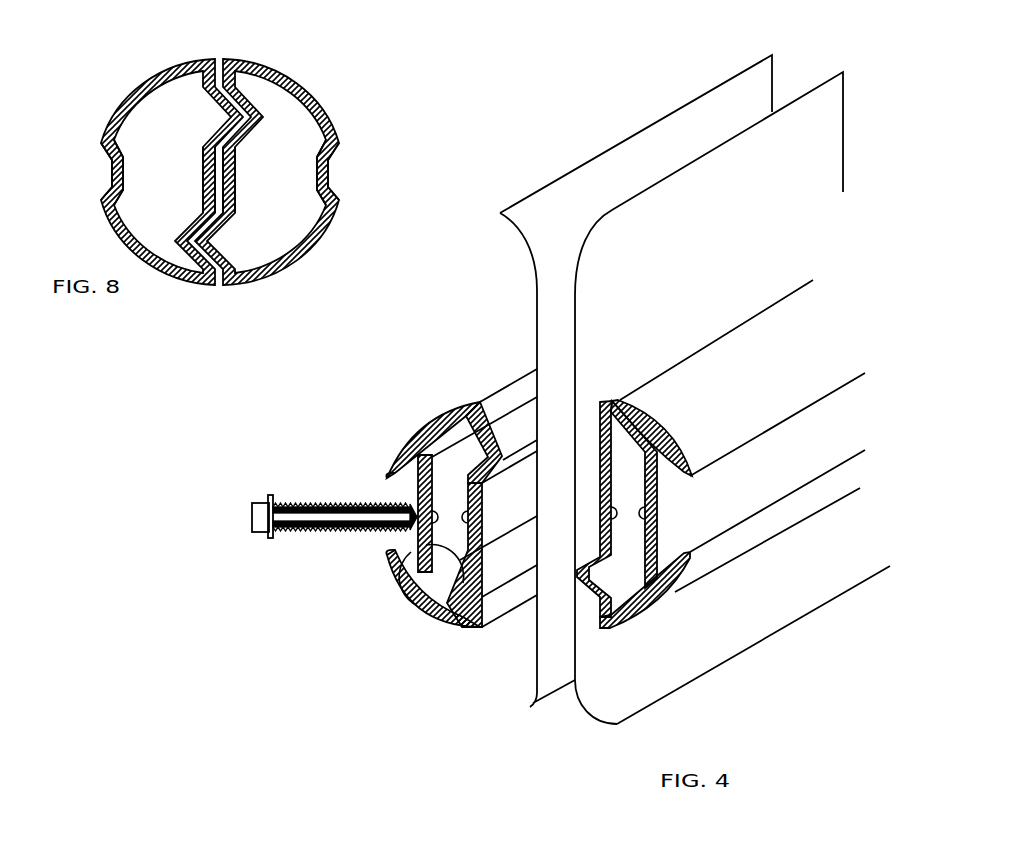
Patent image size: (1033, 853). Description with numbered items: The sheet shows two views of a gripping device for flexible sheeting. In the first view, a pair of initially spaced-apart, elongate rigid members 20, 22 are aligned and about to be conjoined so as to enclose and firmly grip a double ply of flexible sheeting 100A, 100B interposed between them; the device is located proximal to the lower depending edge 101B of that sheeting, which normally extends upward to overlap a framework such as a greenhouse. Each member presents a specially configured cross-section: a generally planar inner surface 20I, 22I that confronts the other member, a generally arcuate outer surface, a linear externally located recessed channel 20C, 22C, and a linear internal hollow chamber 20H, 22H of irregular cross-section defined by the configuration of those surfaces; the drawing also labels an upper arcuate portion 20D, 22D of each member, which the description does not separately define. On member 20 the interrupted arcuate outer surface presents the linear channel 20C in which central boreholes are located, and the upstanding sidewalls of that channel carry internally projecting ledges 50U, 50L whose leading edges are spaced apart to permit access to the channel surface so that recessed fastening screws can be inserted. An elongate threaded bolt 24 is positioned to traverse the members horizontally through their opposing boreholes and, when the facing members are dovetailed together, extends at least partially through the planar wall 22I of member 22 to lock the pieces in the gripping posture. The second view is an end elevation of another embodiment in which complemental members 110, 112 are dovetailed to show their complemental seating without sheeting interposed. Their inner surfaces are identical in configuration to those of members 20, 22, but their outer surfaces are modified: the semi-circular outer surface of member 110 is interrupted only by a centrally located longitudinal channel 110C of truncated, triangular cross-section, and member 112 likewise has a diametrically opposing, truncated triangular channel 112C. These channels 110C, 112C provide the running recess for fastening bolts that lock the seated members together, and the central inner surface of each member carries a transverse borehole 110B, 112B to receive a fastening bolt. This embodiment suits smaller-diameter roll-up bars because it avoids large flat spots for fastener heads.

In FIG. 4, the elongate rigid member 20 is at (410, 485).
In FIG. 4, the recessed channel 20C is at (417, 490).
In FIG. 4, the upper arcuate flange of first rail 20D is at (397, 450).
In FIG. 4, the internal hollow chamber 20H is at (420, 615).
In FIG. 4, the planar inner surface 20I is at (495, 523).
In FIG. 4, the elongate rigid member 22 is at (720, 454).
In FIG. 4, the recessed channel 22C is at (660, 538).
In FIG. 4, the upper arcuate flange of second rail 22D is at (663, 448).
In FIG. 4, the internal hollow chamber 22H is at (620, 400).
In FIG. 4, the planar inner surface 22I is at (603, 502).
In FIG. 4, the threaded bolt 24 is at (252, 522).
In FIG. 4, the internally projecting ledge 50U is at (387, 478).
In FIG. 4, the internally projecting ledge 50L is at (387, 550).
In FIG. 4, the flexible sheeting ply 100A is at (533, 277).
In FIG. 4, the flexible sheeting ply 100B is at (590, 248).
In FIG. 4, the lower depending edge of sheeting 101B is at (793, 625).
In FIG. 8, the gripping member 110 is at (152, 72).
In FIG. 8, the transverse borehole 110B is at (203, 173).
In FIG. 8, the longitudinal channel 110C is at (100, 188).
In FIG. 8, the gripping member 112 is at (308, 90).
In FIG. 8, the transverse borehole 112B is at (233, 175).
In FIG. 8, the longitudinal channel 112C is at (333, 160).